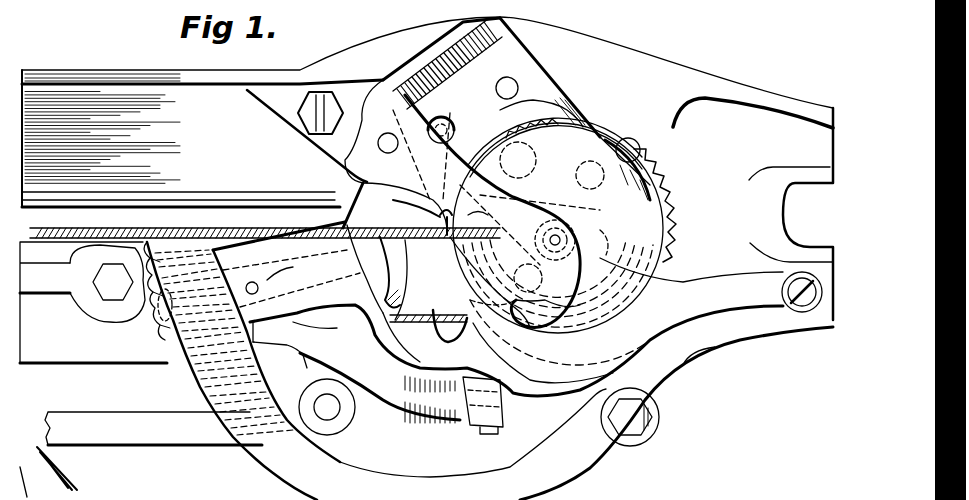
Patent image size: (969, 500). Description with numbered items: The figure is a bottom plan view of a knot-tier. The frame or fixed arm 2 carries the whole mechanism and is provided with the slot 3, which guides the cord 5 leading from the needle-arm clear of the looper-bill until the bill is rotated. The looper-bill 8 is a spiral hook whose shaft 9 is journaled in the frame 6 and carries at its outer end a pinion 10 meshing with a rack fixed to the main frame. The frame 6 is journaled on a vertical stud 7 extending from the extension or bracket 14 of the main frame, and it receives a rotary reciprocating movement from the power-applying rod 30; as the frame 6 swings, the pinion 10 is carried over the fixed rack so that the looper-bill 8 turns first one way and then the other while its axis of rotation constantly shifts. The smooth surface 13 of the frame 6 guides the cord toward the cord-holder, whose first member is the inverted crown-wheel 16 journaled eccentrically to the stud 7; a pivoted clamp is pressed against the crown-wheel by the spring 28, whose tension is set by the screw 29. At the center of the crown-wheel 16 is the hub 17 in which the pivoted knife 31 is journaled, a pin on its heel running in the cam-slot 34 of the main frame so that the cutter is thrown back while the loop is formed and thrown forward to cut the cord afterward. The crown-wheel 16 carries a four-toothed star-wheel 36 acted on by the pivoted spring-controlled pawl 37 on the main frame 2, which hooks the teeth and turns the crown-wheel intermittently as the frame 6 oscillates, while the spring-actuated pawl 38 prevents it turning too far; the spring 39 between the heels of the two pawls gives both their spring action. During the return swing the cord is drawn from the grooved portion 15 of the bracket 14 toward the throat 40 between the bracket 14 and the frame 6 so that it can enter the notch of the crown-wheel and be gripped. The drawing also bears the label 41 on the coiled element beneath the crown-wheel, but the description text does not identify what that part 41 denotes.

The frame or fixed arm 2 is at (427, 258).
The slot 3 is at (265, 225).
The cord 5 is at (201, 283).
The frame 6 is at (498, 276).
The vertical stud 7 is at (468, 217).
The looper-bill 8 is at (405, 278).
The shaft 9 is at (286, 299).
The pinion 10 is at (218, 338).
The smooth surface 13 is at (352, 212).
The extension or bracket 14 is at (504, 211).
The grooved portion 15 is at (450, 222).
The inverted crown-wheel 16 is at (660, 197).
The hub 17 is at (555, 240).
The spring 28 is at (460, 418).
The screw 29 is at (493, 440).
The power-applying rod 30 is at (153, 428).
The pivoted knife 31 is at (438, 335).
The slot 34 is at (650, 135).
The four-toothed star-wheel 36 is at (616, 250).
The pivoted spring-controlled pawl 37 is at (516, 101).
The spring-actuated pawl 38 is at (454, 135).
The spring 39 is at (455, 64).
The throat 40 is at (492, 308).
The spiral spring 41 is at (558, 302).